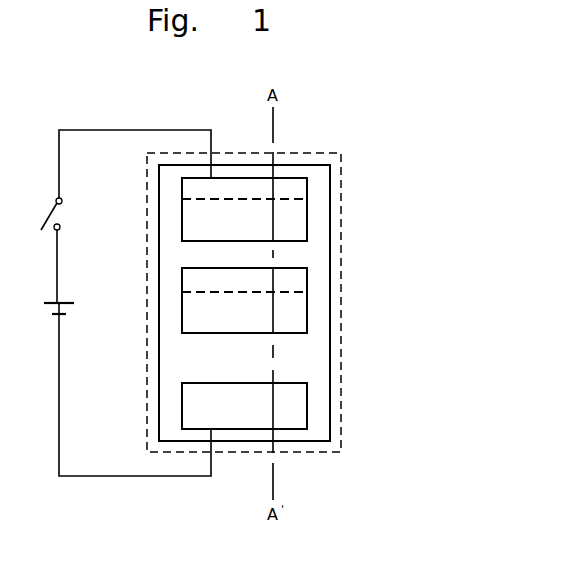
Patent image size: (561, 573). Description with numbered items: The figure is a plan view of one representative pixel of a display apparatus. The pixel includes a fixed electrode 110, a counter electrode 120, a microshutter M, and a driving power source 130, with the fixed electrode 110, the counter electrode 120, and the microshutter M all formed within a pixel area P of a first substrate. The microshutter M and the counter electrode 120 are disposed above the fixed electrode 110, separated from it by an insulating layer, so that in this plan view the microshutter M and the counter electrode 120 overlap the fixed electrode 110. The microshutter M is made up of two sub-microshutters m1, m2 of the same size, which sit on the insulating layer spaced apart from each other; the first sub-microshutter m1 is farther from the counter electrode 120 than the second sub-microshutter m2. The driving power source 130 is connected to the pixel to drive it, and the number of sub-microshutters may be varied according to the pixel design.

The fixed electrode 110 is at (332, 362).
The counter electrode 120 is at (308, 405).
The driving power source 130 is at (125, 477).
The pixel area P is at (345, 325).
The microshutter M is at (312, 280).
The first sub-microshutter m1 is at (308, 188).
The second sub-microshutter m2 is at (308, 281).